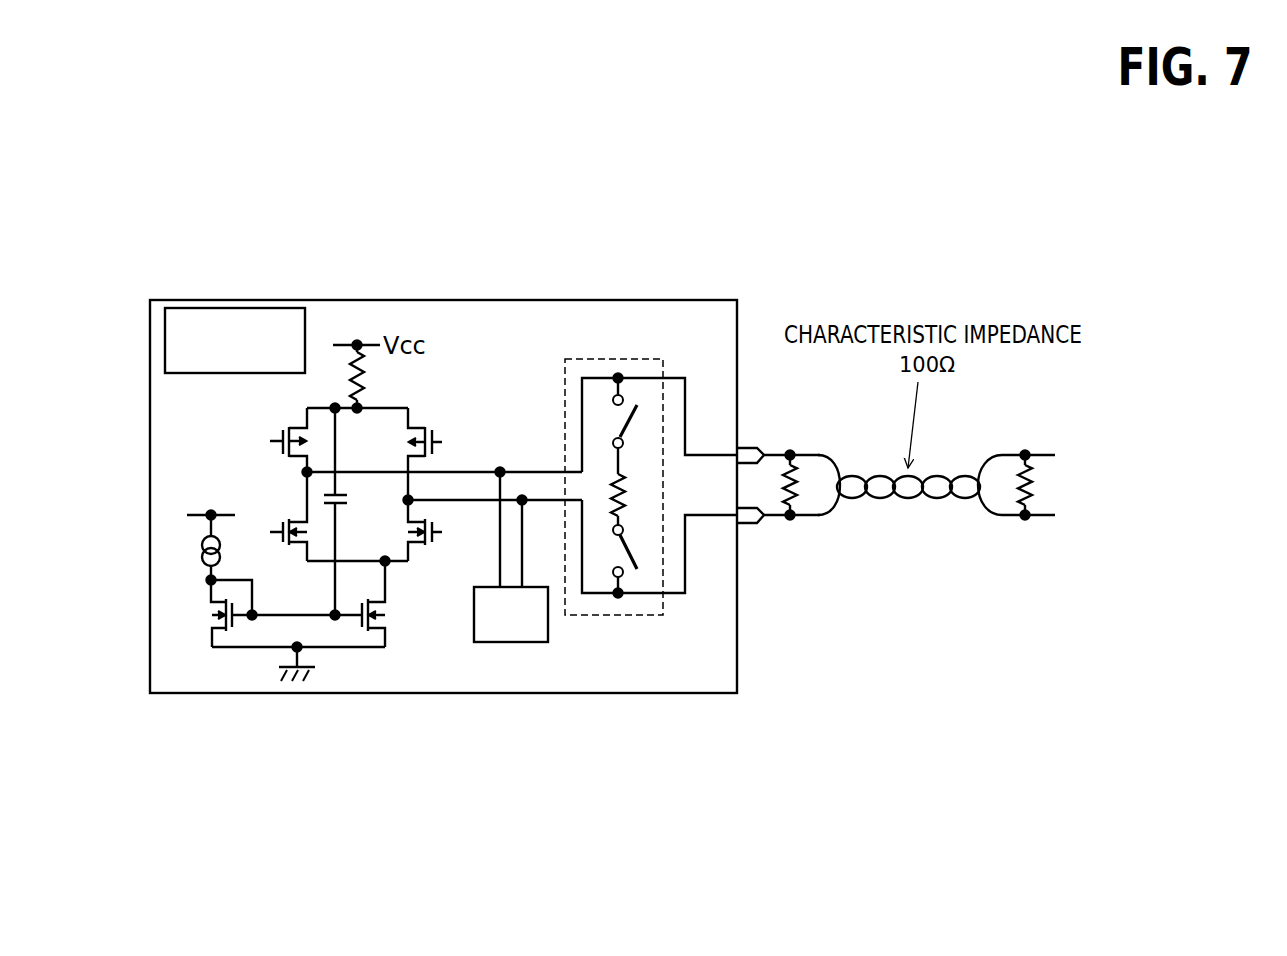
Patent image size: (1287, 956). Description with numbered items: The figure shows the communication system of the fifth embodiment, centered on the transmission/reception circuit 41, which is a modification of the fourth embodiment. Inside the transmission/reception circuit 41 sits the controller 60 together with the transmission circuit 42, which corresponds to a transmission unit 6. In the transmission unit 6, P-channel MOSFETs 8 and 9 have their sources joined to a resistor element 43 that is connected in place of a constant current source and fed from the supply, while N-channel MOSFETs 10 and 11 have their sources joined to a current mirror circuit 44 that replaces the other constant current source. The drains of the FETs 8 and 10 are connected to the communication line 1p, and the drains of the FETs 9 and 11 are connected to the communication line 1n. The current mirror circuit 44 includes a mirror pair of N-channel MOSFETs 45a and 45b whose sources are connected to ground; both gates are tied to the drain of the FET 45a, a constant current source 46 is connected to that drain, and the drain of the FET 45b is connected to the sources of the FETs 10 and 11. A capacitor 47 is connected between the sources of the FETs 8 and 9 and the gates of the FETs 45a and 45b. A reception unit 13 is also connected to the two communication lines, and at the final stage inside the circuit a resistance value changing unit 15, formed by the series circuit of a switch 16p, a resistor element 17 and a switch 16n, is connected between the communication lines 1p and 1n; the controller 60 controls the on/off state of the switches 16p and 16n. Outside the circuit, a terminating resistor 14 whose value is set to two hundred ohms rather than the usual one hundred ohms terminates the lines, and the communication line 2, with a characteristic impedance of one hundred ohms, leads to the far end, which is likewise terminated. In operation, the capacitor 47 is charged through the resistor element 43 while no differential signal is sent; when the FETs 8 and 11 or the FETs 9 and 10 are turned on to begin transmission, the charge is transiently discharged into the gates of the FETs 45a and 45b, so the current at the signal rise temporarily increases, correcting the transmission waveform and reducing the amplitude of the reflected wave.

The transmission/reception circuit 41 is at (444, 300).
The controller 60 is at (235, 340).
The resistor element 43 is at (364, 380).
The transmission circuit 42 is at (448, 412).
The P-channel MOSFET 8 is at (280, 436).
The P-channel MOSFET 9 is at (442, 437).
The N-channel MOSFET 10 is at (282, 522).
The N-channel MOSFET 11 is at (441, 538).
The transmission unit 6 is at (285, 485).
The capacitor 47 is at (352, 500).
The current mirror circuit 44 is at (263, 618).
The N-channel MOSFET 45a is at (205, 626).
The N-channel MOSFET 45b is at (392, 618).
The constant current source 46 is at (204, 551).
The reception unit 13 is at (517, 642).
The resistance value changing unit 15 is at (619, 358).
The switch 16p is at (641, 411).
The switch 16n is at (641, 561).
The resistor element 17 is at (664, 487).
The communication line 1p is at (810, 448).
The communication line 1n is at (821, 525).
The terminating resistor 14 is at (810, 493).
The communication line 2 is at (961, 440).